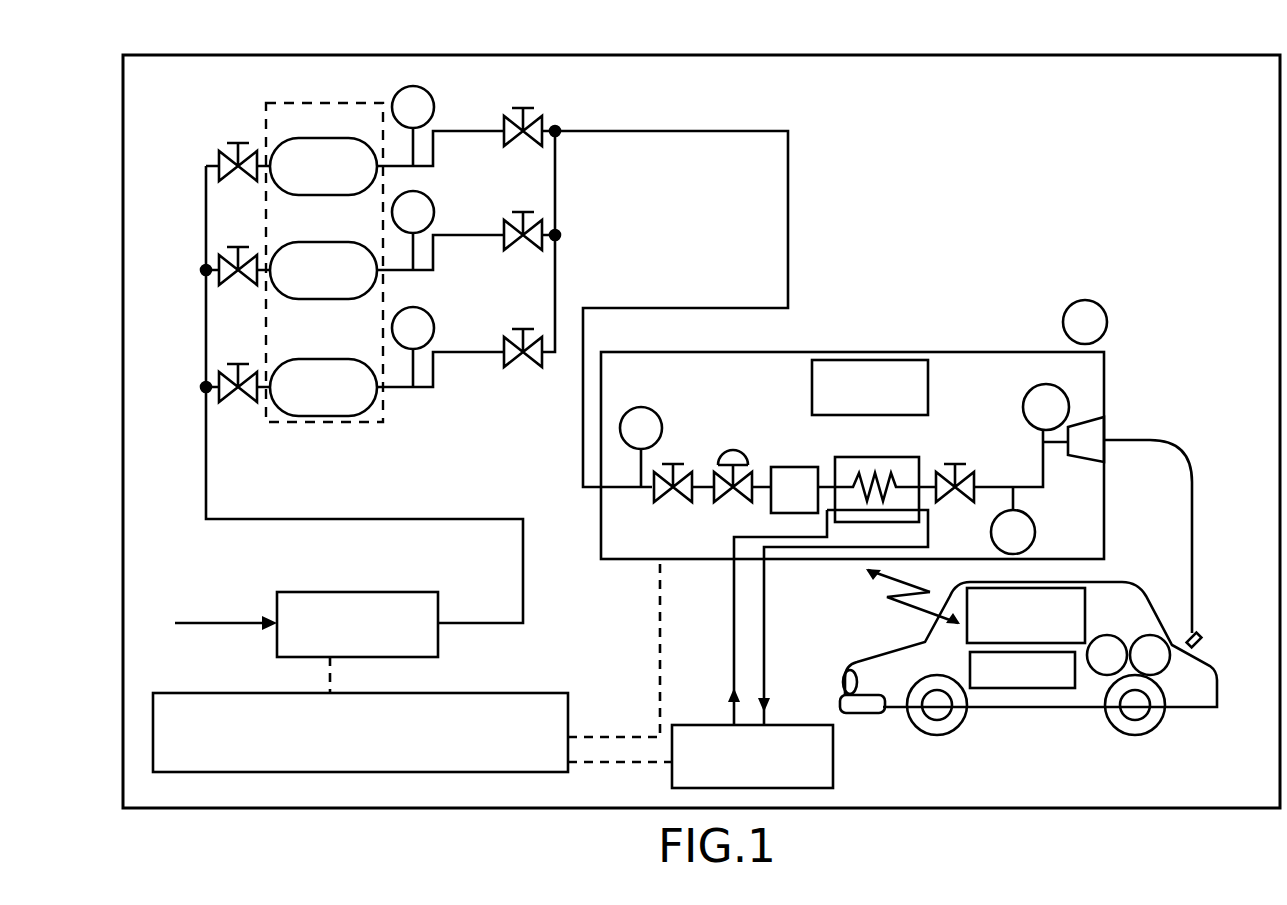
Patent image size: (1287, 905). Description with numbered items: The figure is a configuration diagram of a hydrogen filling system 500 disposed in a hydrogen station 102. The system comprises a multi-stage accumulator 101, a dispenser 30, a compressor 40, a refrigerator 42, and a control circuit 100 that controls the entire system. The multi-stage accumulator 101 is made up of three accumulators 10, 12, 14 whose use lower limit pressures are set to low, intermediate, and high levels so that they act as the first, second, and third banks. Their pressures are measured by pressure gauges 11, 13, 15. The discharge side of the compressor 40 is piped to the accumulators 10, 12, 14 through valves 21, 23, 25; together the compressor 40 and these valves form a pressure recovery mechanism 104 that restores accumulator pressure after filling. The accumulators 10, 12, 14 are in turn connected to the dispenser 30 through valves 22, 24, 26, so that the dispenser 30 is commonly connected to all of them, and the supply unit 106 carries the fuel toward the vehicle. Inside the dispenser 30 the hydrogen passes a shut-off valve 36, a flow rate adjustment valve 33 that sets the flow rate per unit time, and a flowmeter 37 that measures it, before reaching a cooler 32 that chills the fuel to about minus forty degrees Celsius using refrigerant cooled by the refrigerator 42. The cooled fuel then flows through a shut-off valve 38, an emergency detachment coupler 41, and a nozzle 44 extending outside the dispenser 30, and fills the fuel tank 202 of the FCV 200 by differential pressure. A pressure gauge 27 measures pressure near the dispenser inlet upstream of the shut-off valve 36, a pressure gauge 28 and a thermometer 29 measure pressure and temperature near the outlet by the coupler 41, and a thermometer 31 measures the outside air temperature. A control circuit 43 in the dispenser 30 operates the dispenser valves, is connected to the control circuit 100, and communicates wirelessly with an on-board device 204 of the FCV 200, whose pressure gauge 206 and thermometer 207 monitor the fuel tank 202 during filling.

The hydrogen filling system 500 is at (657, 50).
The hydrogen station 102 is at (440, 54).
The multi-stage accumulator 101 is at (305, 103).
The accumulator 10 is at (305, 138).
The accumulator 12 is at (308, 243).
The accumulator 14 is at (308, 360).
The pressure gauge 11 is at (432, 98).
The pressure gauge 13 is at (432, 205).
The pressure gauge 15 is at (432, 322).
The valve 21 is at (238, 143).
The valve 23 is at (232, 285).
The valve 25 is at (232, 402).
The valve 22 is at (528, 108).
The valve 24 is at (522, 212).
The valve 26 is at (522, 329).
The compressor 40 is at (333, 590).
The control circuit 100 is at (480, 693).
The pressure recovery mechanism 104 is at (192, 508).
The supply unit 106 is at (549, 603).
The dispenser 30 is at (968, 352).
The pressure gauge 27 is at (652, 410).
The shut-off valve 36 is at (676, 463).
The flow rate adjustment valve 33 is at (740, 450).
The flowmeter 37 is at (790, 467).
The cooler 32 is at (875, 457).
The control circuit 43 is at (928, 397).
The shut-off valve 38 is at (955, 460).
The pressure gauge 28 is at (1026, 418).
The thermometer 29 is at (1035, 532).
The emergency detachment coupler 41 is at (1090, 464).
The thermometer 31 is at (1107, 318).
The refrigerator 42 is at (833, 775).
The nozzle 44 is at (1200, 637).
The FCV 200 is at (1115, 575).
The fuel tank 202 is at (1025, 688).
The on-board device 204 is at (1090, 623).
The pressure gauge 206 is at (1160, 675).
The thermometer 207 is at (1098, 675).